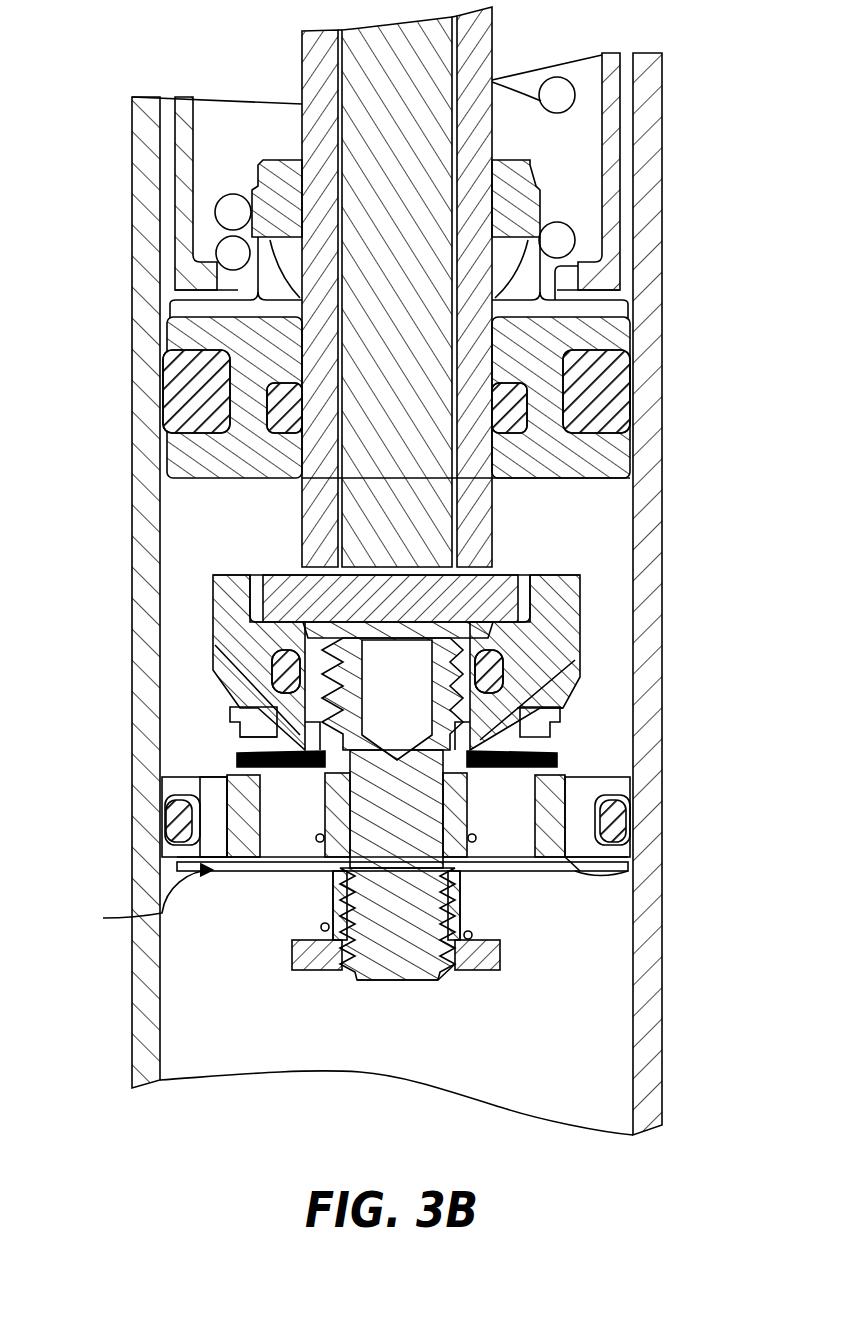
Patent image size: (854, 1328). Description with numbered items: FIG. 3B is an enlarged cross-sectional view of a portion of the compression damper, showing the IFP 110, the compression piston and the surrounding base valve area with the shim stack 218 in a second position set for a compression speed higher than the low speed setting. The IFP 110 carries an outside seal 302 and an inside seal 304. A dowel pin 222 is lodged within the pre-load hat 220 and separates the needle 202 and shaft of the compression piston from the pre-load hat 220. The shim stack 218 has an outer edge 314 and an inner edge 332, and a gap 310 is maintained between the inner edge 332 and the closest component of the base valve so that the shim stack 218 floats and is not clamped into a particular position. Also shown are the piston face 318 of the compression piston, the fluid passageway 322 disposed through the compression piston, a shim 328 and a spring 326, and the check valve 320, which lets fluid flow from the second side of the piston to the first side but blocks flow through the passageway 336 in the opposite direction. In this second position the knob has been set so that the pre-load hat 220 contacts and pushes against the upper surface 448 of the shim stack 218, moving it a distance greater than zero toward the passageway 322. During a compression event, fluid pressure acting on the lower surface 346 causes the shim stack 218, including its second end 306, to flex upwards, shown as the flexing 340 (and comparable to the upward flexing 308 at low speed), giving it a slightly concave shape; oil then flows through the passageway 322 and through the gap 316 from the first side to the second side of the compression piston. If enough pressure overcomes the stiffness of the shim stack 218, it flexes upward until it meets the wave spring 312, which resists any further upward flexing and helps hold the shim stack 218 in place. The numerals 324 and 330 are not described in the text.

The IFP 110 is at (242, 359).
The needle 202 is at (380, 292).
The shim stack 218 is at (557, 757).
The pre-load hat 220 is at (232, 652).
The dowel pin 222 is at (380, 610).
The outside seal 302 is at (172, 400).
The inside seal 304 is at (600, 477).
The second end 306 is at (240, 740).
The upward flexing 308 is at (170, 813).
The gap 310 is at (545, 708).
The wave spring 312 is at (240, 712).
The outer edge 314 is at (227, 772).
The gap 316 is at (565, 767).
The piston face 318 is at (170, 850).
The check valve 320 is at (177, 868).
The fluid passageway 322 is at (318, 868).
The sleeve 324 is at (285, 838).
The spring 326 is at (500, 942).
The shim 328 is at (325, 868).
The bolt end 330 is at (432, 980).
The inner edge 332 is at (350, 757).
The passageway 336 is at (135, 900).
The flexing 340 is at (240, 754).
The lower surface 346 is at (628, 860).
The upper surface 448 is at (253, 717).